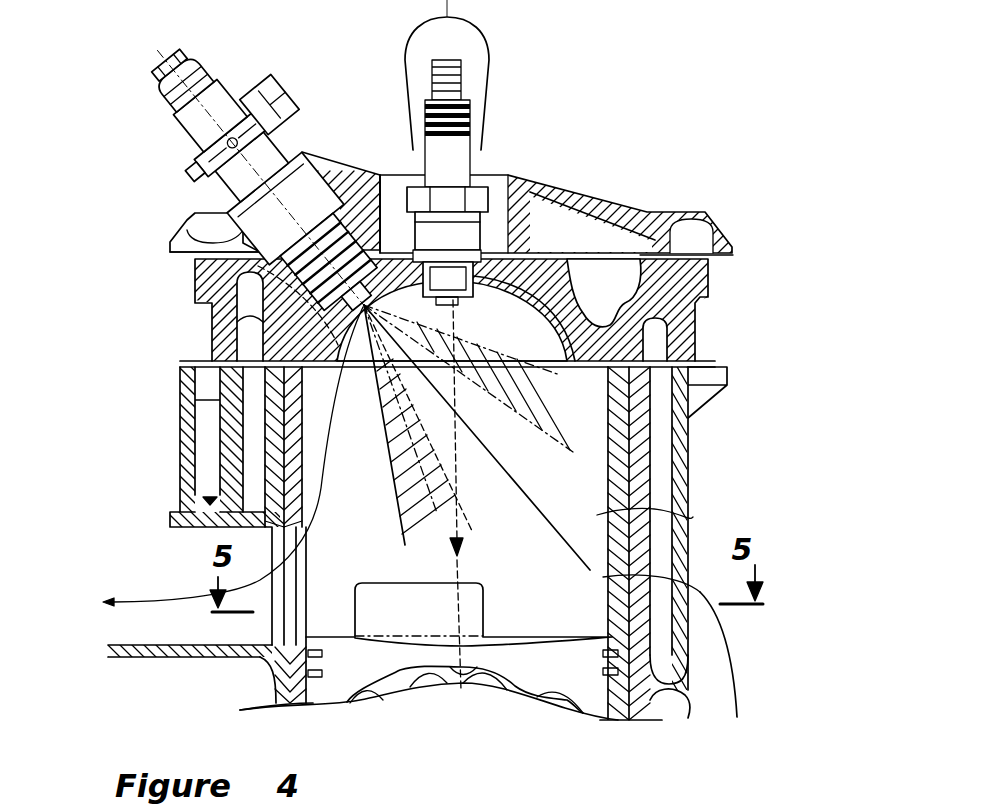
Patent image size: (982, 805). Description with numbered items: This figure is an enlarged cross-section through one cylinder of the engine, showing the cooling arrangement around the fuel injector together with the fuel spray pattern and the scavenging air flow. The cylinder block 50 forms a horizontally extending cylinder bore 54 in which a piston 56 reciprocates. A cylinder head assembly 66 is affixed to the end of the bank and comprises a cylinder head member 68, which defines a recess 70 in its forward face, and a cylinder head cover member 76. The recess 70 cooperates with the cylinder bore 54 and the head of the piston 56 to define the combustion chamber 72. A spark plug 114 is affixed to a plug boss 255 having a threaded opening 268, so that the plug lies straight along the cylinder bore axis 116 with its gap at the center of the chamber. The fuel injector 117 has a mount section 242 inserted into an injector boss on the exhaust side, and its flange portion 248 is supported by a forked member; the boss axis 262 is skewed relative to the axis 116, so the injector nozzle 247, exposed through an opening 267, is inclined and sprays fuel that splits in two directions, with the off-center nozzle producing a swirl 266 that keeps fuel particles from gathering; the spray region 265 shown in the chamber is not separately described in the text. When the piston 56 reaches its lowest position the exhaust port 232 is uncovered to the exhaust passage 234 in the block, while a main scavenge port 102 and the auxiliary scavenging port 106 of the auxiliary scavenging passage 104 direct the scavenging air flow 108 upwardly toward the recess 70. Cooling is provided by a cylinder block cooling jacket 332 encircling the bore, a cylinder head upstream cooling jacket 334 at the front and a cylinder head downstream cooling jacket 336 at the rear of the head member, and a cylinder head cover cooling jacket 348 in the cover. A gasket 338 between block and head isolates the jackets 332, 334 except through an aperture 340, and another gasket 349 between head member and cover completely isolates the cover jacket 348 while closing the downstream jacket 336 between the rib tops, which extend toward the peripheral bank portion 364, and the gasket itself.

The fuel injector 117 is at (290, 175).
The axis of injector boss 262 is at (330, 172).
The spark plug 114 is at (472, 160).
The threaded opening 268 is at (395, 248).
The plug boss 255 is at (495, 235).
The cylinder head cover cooling jacket 348 is at (535, 188).
The gasket 349 is at (557, 243).
The cylinder head downstream cooling jacket 336 is at (587, 247).
The cylinder head cover member 76 is at (685, 210).
The flange portion 248 is at (187, 233).
The peripheral bank portion 364 is at (683, 272).
The mount section 242 is at (255, 271).
The recess 70 is at (581, 342).
The combustion chamber 72 is at (511, 337).
The cylinder head assembly 66 is at (708, 293).
The injector nozzle 247 is at (238, 333).
The cylinder head member 68 is at (688, 329).
The cylinder head upstream cooling jacket 334 is at (665, 347).
The aperture 340 is at (222, 410).
The gasket 338 is at (690, 388).
The scavenging air flow 108 is at (195, 597).
The cylinder block cooling jacket 332 is at (252, 462).
The opening 267 is at (372, 312).
The swirl 266 is at (456, 466).
The cylinder bore 54 is at (477, 437).
The cylinder block 50 is at (684, 517).
The cylinder bore axis 116 is at (460, 567).
The spray cone 265 is at (402, 495).
The exhaust port 232 is at (419, 609).
The main scavenge port 102 is at (478, 623).
The auxiliary scavenging port 106 is at (620, 617).
The auxiliary scavenging passage 104 is at (728, 634).
The exhaust passage 234 is at (187, 635).
The piston 56 is at (502, 652).